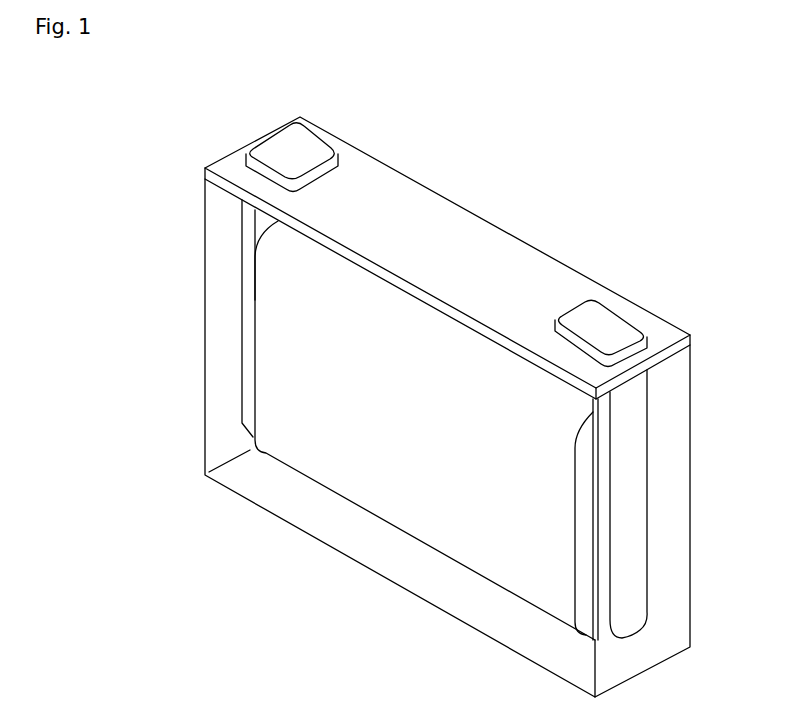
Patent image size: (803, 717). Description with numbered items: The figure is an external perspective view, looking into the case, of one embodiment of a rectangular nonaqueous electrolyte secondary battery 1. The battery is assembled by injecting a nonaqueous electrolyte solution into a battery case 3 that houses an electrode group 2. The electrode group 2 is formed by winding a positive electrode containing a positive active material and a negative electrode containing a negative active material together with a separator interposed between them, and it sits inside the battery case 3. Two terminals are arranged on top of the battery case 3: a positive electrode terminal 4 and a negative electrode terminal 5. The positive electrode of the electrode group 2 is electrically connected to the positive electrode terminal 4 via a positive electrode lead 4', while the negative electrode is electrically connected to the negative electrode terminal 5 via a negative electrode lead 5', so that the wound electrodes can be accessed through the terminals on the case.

The nonaqueous electrolyte secondary battery 1 is at (575, 212).
The electrode group 2 is at (408, 429).
The battery case 3 is at (204, 273).
The positive electrode terminal 4 is at (292, 129).
The positive electrode lead 4' is at (207, 282).
The negative electrode terminal 5 is at (601, 303).
The negative electrode lead 5' is at (669, 504).